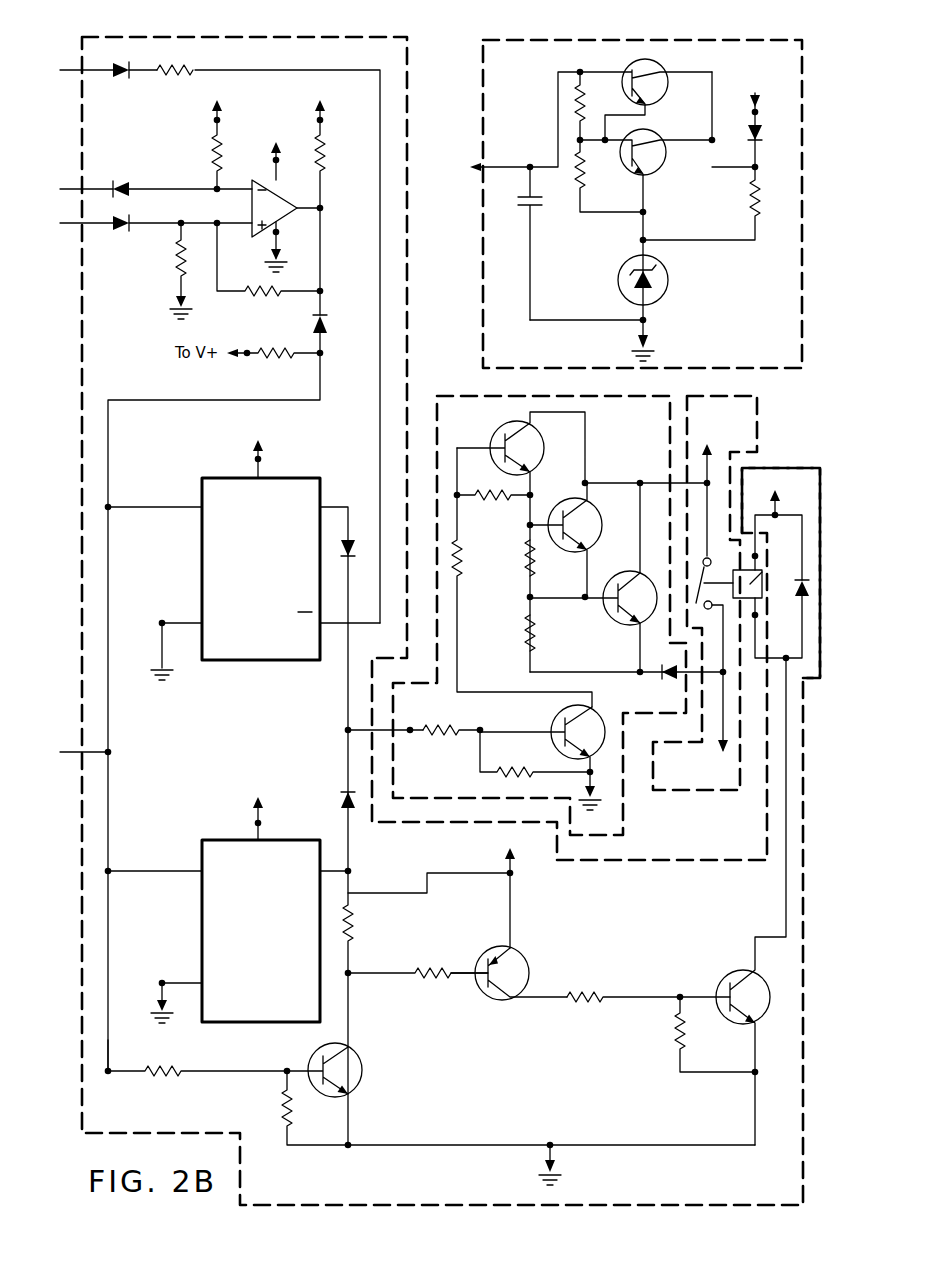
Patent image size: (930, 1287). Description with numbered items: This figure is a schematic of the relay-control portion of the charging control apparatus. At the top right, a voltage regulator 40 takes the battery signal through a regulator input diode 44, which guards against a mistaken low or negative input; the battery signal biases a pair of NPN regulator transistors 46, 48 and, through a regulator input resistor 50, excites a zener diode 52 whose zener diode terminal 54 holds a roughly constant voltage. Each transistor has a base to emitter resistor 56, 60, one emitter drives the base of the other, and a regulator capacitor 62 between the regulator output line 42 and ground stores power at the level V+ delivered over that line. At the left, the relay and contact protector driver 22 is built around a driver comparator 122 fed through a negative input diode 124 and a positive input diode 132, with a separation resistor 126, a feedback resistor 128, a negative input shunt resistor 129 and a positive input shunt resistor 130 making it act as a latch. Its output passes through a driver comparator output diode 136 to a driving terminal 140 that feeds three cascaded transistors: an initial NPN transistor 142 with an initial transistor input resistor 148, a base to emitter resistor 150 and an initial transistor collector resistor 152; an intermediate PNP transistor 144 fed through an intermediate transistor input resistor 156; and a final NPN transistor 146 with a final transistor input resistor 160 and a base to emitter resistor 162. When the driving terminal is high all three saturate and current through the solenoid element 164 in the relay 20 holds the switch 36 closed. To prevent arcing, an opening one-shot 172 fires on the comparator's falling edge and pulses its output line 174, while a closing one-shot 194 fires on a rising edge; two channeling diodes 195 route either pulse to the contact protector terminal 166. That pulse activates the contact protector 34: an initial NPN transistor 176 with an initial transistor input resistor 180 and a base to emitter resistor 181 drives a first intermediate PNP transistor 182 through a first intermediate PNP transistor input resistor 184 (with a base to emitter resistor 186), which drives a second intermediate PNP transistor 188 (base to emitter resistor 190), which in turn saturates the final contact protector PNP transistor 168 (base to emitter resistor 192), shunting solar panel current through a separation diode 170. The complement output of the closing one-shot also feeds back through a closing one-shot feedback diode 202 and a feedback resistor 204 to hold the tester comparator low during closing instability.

The relay 20 is at (706, 793).
The relay and contact protector driver 22 is at (240, 1208).
The contact protector 34 is at (624, 822).
The switch 36 is at (729, 598).
The voltage regulator 40 is at (483, 288).
The regulator output line 42 is at (510, 165).
The regulator input diode 44 is at (760, 135).
The regulator transistor 46 is at (660, 138).
The regulator transistor 48 is at (668, 90).
The regulator input resistor 50 is at (760, 203).
The zener diode 52 is at (670, 283).
The zener diode terminal 54 is at (640, 241).
The base to emitter resistor 56 is at (588, 180).
The base to emitter resistor 60 is at (574, 99).
The regulator capacitor 62 is at (522, 208).
The driver comparator 122 is at (306, 216).
The negative input diode 124 is at (122, 182).
The separation resistor 126 is at (326, 152).
The feedback resistor 128 is at (263, 300).
The negative input shunt resistor 129 is at (213, 152).
The positive input shunt resistor 130 is at (178, 278).
The positive input diode 132 is at (119, 233).
The driver comparator output diode 136 is at (327, 323).
The driving terminal 140 is at (107, 1078).
The initial NPN transistor 142 is at (313, 1052).
The intermediate PNP transistor 144 is at (486, 958).
The final NPN transistor 146 is at (722, 975).
The initial transistor input resistor 148 is at (180, 1070).
The base to emitter resistor 150 is at (282, 1108).
The initial transistor collector resistor 152 is at (356, 932).
The intermediate transistor input resistor 156 is at (442, 990).
The final transistor input resistor 160 is at (585, 990).
The base to emitter resistor 162 is at (672, 1039).
The solenoid element 164 is at (766, 560).
The contact protector terminal 166 is at (411, 727).
The final contact protector PNP transistor 168 is at (605, 621).
The separation diode 170 is at (664, 681).
The opening one-shot 172 is at (202, 920).
The output line 174 is at (344, 877).
The initial NPN transistor 176 is at (559, 712).
The initial transistor input resistor 180 is at (446, 748).
The base to emitter resistor 181 is at (536, 771).
The first intermediate PNP transistor 182 is at (496, 436).
The first intermediate PNP transistor input resistor 184 is at (460, 572).
The base to emitter resistor 186 is at (495, 511).
The second intermediate PNP transistor 188 is at (554, 500).
The base to emitter resistor 190 is at (524, 558).
The base to emitter resistor 192 is at (523, 629).
The closing one-shot 194 is at (202, 565).
The channeling diode 195 is at (352, 536).
The closing one-shot feedback diode 202 is at (118, 74).
The feedback resistor 204 is at (195, 71).